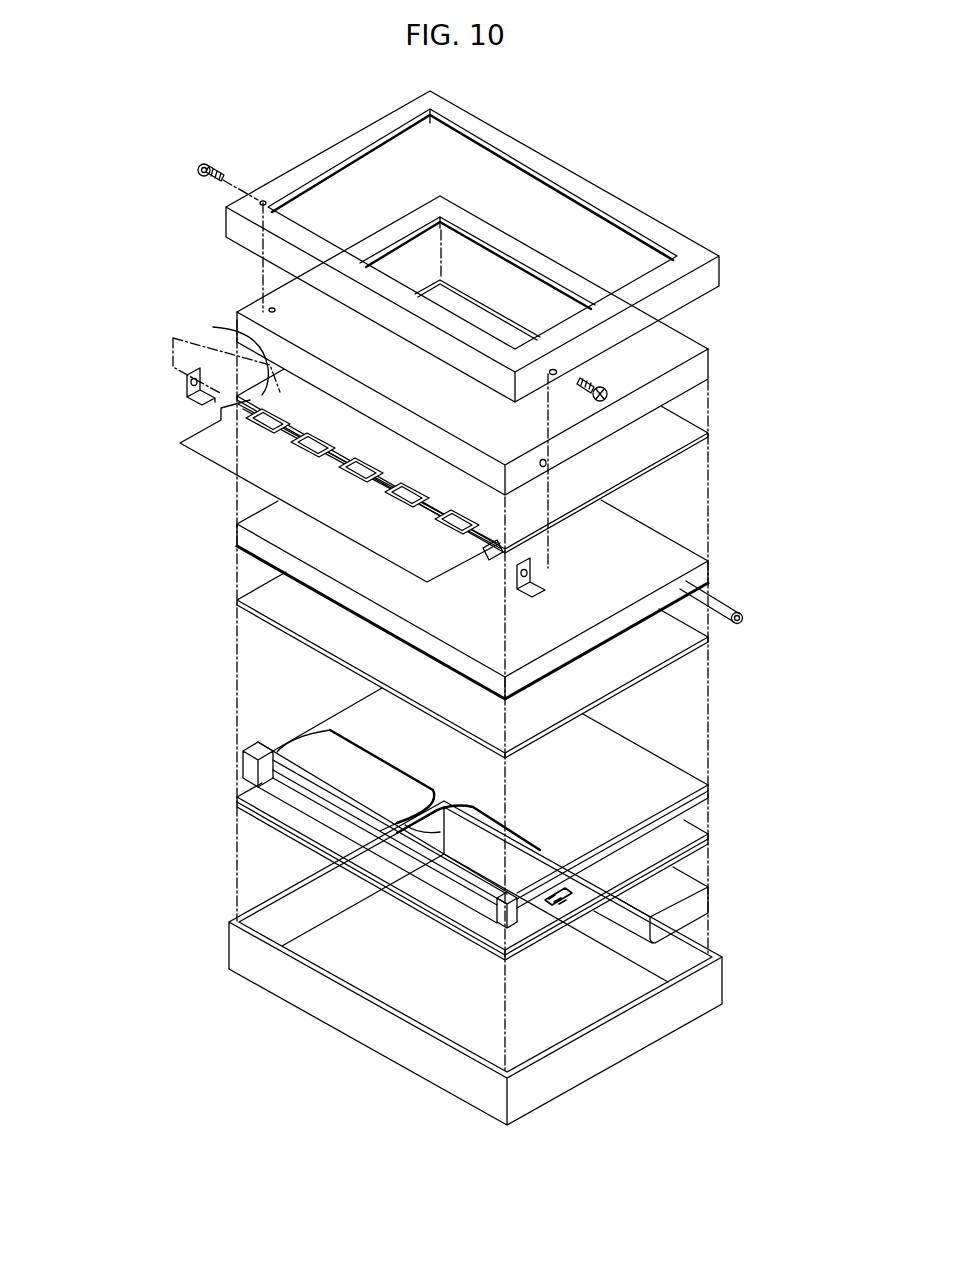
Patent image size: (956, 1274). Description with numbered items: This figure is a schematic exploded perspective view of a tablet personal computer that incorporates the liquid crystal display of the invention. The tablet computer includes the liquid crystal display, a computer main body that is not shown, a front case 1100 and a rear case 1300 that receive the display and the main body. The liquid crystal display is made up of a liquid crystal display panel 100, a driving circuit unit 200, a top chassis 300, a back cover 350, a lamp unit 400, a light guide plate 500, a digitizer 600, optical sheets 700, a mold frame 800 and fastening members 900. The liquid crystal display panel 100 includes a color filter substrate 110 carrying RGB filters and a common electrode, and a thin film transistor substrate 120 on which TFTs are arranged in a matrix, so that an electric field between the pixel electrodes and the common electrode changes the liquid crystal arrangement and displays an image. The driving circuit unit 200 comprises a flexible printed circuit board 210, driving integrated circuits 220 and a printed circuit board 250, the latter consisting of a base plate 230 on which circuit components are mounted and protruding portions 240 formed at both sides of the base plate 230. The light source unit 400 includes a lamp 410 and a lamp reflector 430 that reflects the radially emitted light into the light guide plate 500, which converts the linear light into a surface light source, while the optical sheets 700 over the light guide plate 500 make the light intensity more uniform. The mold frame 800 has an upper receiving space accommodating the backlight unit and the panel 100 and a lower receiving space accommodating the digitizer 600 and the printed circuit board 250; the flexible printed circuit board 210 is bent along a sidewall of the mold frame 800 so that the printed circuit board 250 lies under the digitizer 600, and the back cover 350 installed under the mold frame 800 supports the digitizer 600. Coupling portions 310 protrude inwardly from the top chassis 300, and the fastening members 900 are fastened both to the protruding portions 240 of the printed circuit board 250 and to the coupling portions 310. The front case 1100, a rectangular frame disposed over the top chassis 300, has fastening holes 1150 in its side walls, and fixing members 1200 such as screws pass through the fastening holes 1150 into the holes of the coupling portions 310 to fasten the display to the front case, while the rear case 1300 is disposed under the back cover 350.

The liquid crystal display panel 100 is at (179, 354).
The color filter substrate 110 is at (272, 368).
The thin film transistor substrate 120 is at (217, 362).
The driving circuit unit 200 is at (285, 491).
The flexible printed circuit board 210 is at (249, 425).
The driving integrated circuits 220 is at (262, 440).
The base plate 230 is at (229, 477).
The protruding portions 240 is at (417, 497).
The printed circuit board 250 is at (296, 472).
The top chassis 300 is at (667, 370).
The coupling portions 310 is at (557, 464).
The back cover 350 is at (700, 903).
The light source unit 400 is at (769, 617).
The lamp 410 is at (738, 626).
The lamp reflector 430 is at (743, 611).
The light guide plate 500 is at (663, 656).
The digitizer 600 is at (702, 838).
The optical sheets 700 is at (700, 562).
The mold frame 800 is at (700, 797).
The fastening members 900 is at (178, 391).
The front case 1100 is at (700, 278).
The fastening holes 1150 is at (627, 322).
The fixing members 1200 is at (603, 390).
The rear case 1300 is at (712, 983).